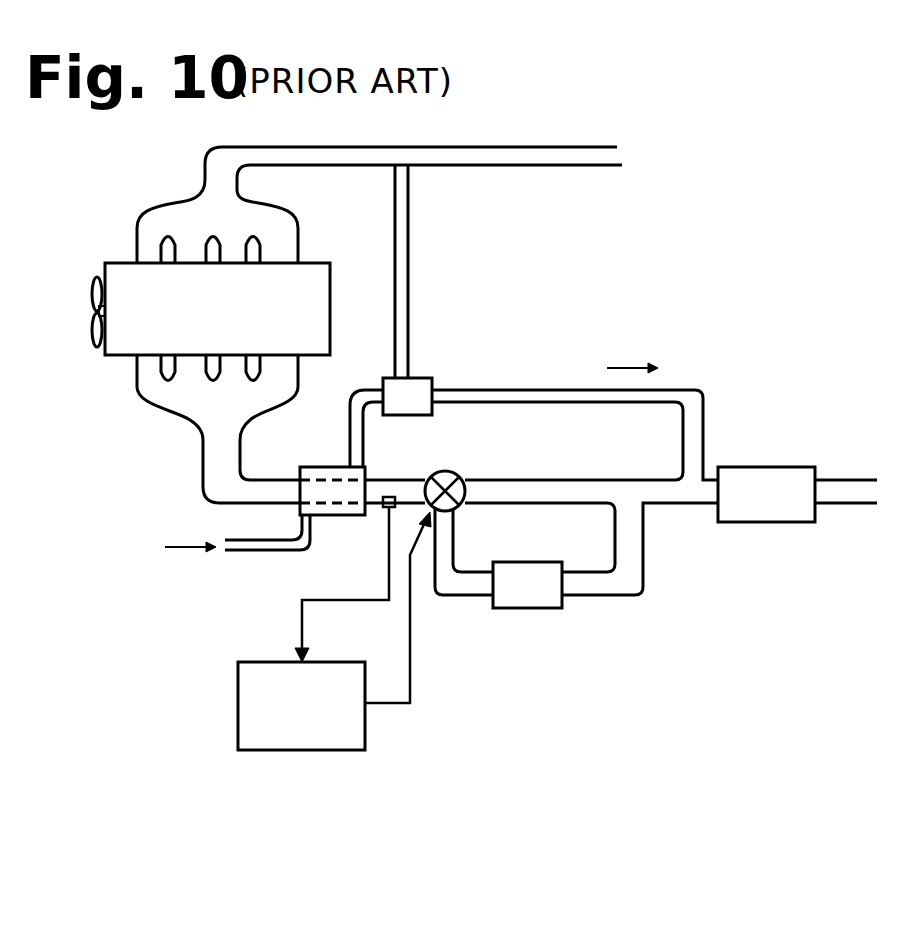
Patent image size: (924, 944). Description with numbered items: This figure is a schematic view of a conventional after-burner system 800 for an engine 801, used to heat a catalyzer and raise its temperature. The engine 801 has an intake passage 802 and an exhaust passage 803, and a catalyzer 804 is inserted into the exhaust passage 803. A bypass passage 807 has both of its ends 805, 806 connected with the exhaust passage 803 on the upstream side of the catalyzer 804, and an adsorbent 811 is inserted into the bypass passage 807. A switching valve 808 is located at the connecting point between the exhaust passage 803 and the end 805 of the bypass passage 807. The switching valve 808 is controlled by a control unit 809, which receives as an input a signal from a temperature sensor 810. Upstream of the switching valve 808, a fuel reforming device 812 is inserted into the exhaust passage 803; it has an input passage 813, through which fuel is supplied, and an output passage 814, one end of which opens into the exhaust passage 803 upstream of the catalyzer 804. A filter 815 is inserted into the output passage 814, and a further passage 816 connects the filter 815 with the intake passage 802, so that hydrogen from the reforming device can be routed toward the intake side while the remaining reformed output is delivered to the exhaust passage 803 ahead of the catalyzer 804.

The after-burner system 800 is at (716, 326).
The engine 801 is at (330, 283).
The intake passage 802 is at (535, 165).
The exhaust passage 803 is at (850, 505).
The catalyzer 804 is at (773, 467).
The end of bypass passage 805 is at (448, 523).
The end of bypass passage 806 is at (633, 522).
The bypass passage 807 is at (602, 587).
The switching valve 808 is at (453, 470).
The control unit 809 is at (353, 736).
The temperature sensor 810 is at (378, 513).
The adsorbent 811 is at (527, 607).
The fuel reforming device 812 is at (320, 467).
The input passage 813 is at (253, 552).
The output passage 814 is at (537, 382).
The filter 815 is at (430, 378).
The passage 816 is at (408, 275).